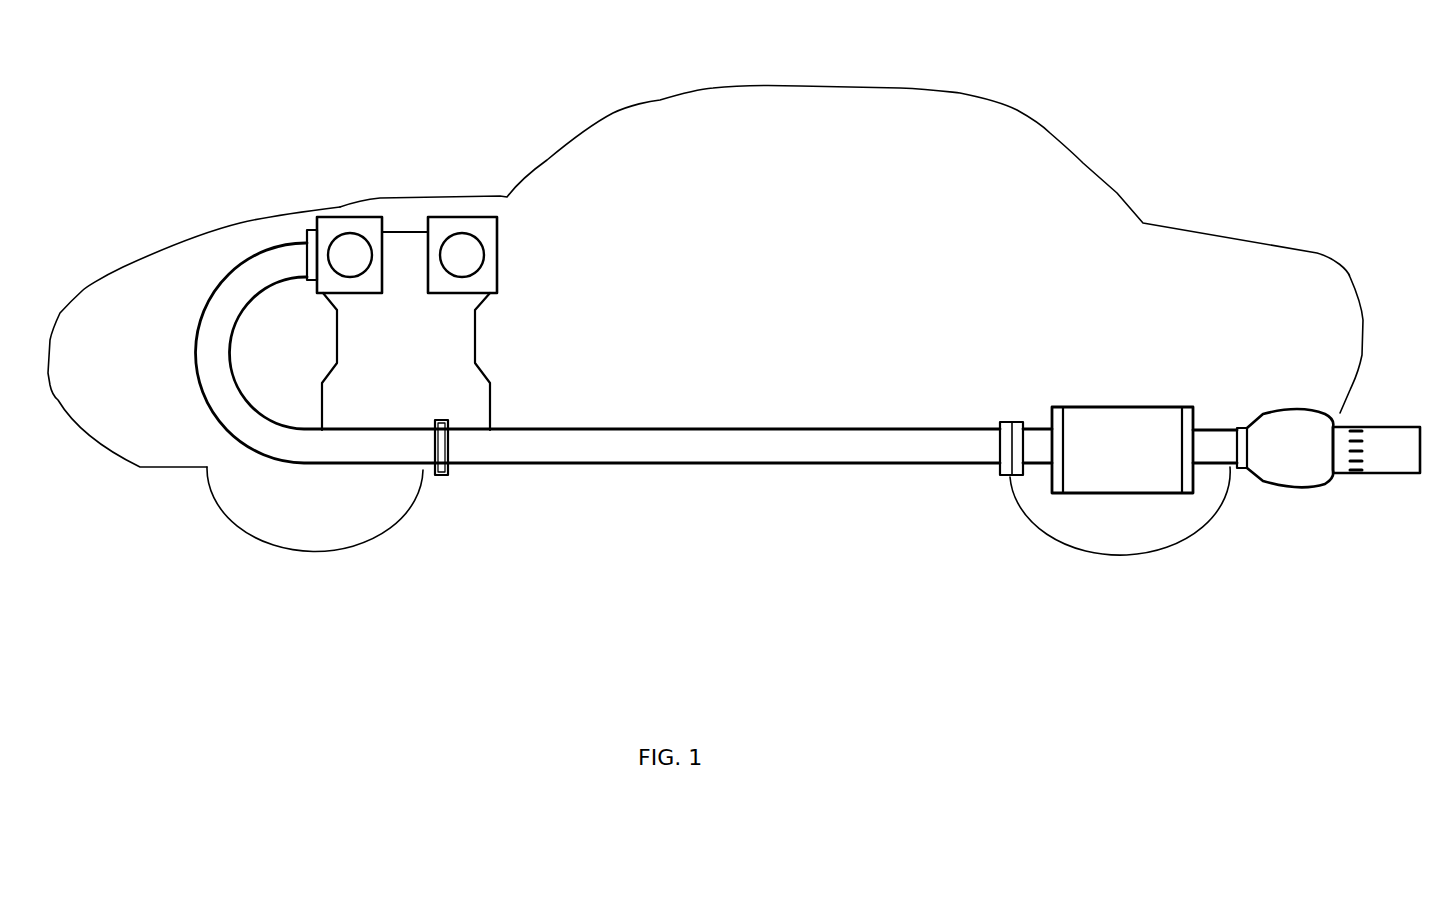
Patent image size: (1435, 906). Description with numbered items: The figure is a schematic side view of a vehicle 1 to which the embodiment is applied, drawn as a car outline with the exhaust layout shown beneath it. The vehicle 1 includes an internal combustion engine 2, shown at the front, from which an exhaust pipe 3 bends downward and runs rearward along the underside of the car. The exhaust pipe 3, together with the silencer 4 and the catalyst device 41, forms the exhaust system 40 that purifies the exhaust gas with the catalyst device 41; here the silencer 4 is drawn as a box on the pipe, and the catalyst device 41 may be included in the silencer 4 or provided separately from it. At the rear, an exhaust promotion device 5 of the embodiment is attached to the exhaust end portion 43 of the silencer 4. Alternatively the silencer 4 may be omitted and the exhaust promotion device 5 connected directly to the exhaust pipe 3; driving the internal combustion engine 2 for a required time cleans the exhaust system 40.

The vehicle 1 is at (1128, 198).
The internal combustion engine 2 is at (410, 255).
The exhaust pipe 3 is at (582, 466).
The exhaust system 40 is at (872, 476).
The silencer 4 is at (1117, 436).
The catalyst device 41 is at (1113, 386).
The exhaust end portion 43 is at (1208, 430).
The exhaust promotion device 5 is at (1312, 490).